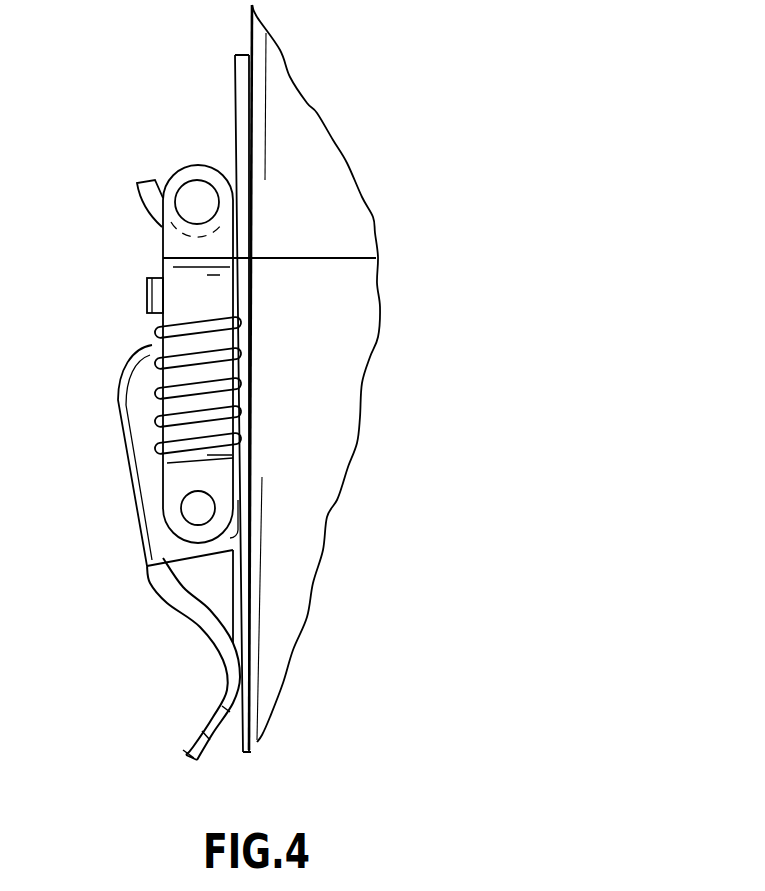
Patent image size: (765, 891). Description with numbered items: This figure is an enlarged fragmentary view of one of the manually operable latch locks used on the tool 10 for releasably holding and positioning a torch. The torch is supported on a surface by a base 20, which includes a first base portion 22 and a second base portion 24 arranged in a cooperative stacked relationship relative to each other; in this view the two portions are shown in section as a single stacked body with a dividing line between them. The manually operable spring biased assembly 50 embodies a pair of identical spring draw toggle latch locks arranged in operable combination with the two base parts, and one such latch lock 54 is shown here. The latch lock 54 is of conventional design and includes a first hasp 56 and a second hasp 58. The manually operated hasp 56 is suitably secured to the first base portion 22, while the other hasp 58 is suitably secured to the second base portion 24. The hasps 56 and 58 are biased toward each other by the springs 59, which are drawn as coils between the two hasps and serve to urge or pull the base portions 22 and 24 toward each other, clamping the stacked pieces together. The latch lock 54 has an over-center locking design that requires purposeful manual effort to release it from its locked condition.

The tool 10 is at (158, 118).
The base 20 is at (391, 502).
The first base portion 22 is at (348, 417).
The second base portion 24 is at (360, 207).
The spring biased assembly 50 is at (133, 655).
The latch lock 54 is at (90, 394).
The first hasp 56 is at (237, 580).
The second hasp 58 is at (240, 108).
The spring 59 is at (247, 357).